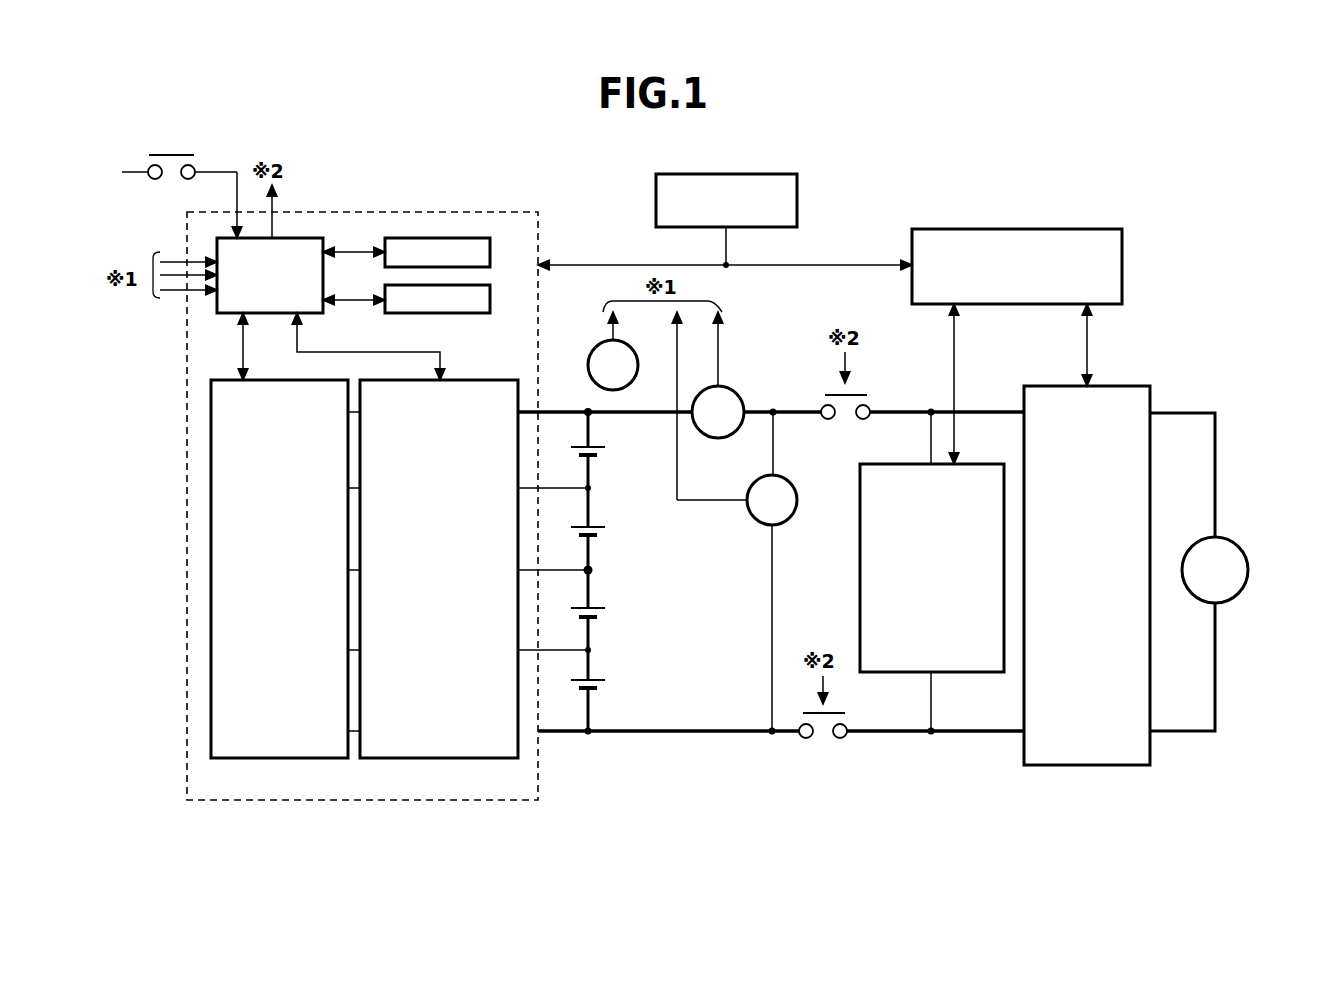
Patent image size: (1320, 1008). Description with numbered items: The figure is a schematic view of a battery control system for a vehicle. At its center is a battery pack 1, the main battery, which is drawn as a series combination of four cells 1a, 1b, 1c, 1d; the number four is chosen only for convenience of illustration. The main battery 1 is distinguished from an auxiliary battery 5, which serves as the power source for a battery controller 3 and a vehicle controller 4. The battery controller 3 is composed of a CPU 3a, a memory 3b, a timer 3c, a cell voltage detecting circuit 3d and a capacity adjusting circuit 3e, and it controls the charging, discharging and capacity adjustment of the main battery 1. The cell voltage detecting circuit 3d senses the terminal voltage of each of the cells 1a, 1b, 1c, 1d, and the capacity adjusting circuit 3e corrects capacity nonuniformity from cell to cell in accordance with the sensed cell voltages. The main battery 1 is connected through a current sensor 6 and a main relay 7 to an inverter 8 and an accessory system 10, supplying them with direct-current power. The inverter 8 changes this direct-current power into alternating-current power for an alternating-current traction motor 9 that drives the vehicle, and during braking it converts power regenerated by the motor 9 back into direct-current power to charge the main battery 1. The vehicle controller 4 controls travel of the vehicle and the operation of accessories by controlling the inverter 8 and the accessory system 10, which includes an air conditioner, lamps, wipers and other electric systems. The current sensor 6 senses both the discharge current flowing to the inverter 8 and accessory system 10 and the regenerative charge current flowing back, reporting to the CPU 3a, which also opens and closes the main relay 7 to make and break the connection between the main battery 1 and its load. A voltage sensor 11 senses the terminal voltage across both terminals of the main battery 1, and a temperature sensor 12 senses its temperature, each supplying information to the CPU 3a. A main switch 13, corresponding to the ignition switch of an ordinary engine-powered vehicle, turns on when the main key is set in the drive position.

The battery pack 1 is at (636, 578).
The cell 1a is at (605, 452).
The cell 1b is at (605, 532).
The cell 1c is at (604, 613).
The cell 1d is at (605, 686).
The battery controller 3 is at (150, 796).
The CPU 3a is at (305, 238).
The memory 3b is at (477, 238).
The timer 3c is at (470, 313).
The cell voltage detecting circuit 3d is at (211, 713).
The capacity adjusting circuit 3e is at (518, 745).
The vehicle controller 4 is at (1050, 229).
The auxiliary battery 5 is at (797, 190).
The current sensor 6 is at (737, 390).
The main relay 7 is at (846, 422).
The inverter 8 is at (1115, 386).
The alternating-current traction motor 9 is at (1228, 540).
The accessory system 10 is at (860, 548).
The voltage sensor 11 is at (793, 515).
The temperature sensor 12 is at (592, 355).
The main switch 13 is at (200, 160).